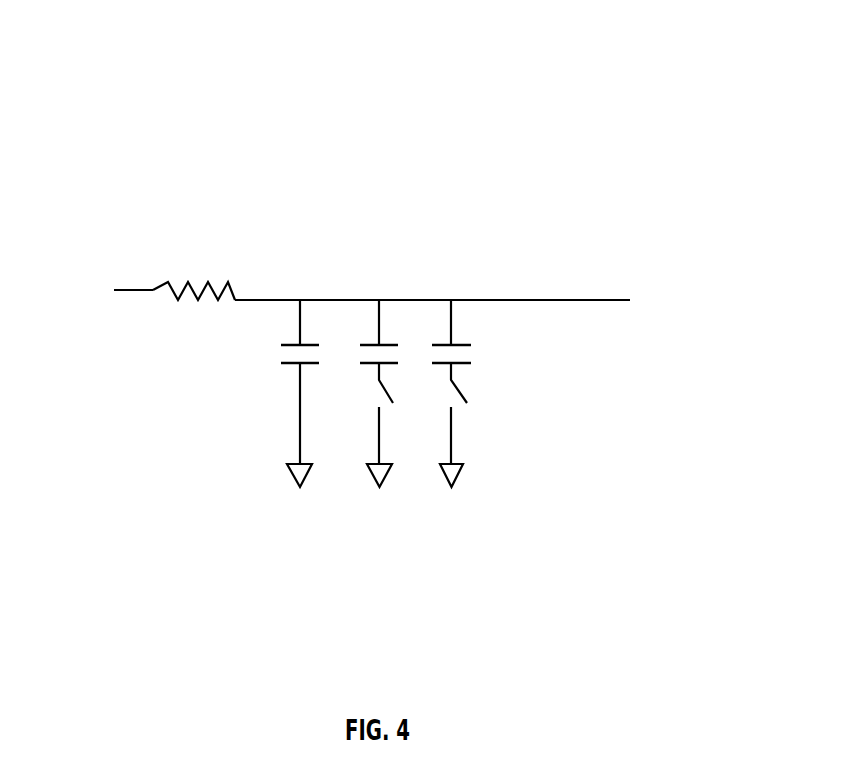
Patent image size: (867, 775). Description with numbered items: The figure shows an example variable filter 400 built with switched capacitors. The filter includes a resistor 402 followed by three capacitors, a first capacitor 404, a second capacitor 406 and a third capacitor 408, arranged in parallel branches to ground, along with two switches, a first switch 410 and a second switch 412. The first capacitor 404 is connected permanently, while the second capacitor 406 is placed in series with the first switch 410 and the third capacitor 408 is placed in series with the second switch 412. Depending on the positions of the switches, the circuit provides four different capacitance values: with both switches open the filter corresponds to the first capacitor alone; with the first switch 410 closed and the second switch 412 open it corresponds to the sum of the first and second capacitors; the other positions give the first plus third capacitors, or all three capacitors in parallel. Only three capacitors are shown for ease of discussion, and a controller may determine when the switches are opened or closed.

The variable filter 400 is at (104, 98).
The resistor R 402 is at (200, 260).
The capacitor C1 404 is at (257, 368).
The capacitor C2 406 is at (343, 368).
The capacitor C3 408 is at (507, 352).
The switch SW1 410 is at (408, 416).
The switch SW2 412 is at (517, 405).